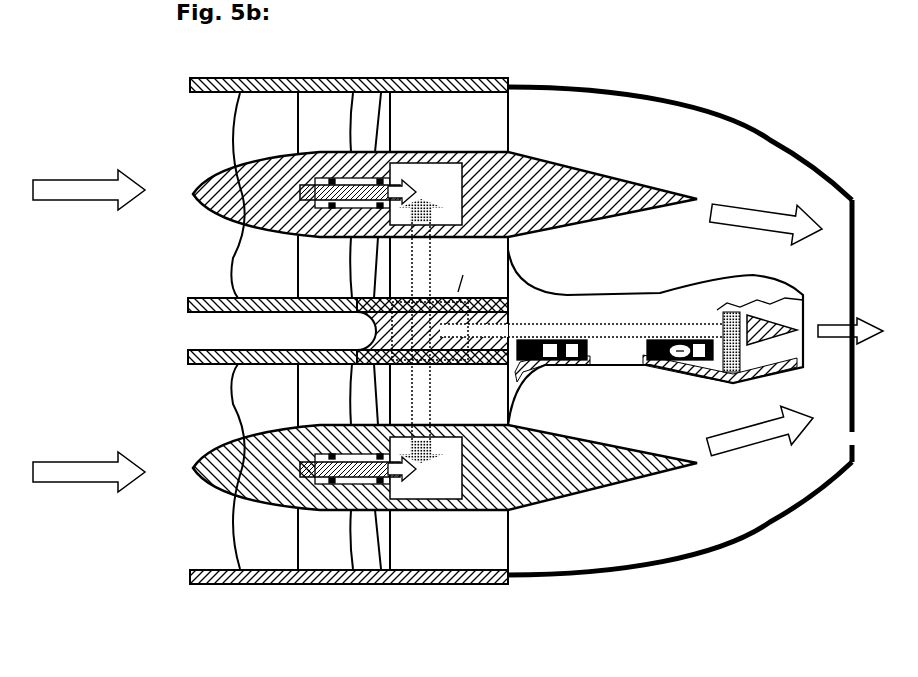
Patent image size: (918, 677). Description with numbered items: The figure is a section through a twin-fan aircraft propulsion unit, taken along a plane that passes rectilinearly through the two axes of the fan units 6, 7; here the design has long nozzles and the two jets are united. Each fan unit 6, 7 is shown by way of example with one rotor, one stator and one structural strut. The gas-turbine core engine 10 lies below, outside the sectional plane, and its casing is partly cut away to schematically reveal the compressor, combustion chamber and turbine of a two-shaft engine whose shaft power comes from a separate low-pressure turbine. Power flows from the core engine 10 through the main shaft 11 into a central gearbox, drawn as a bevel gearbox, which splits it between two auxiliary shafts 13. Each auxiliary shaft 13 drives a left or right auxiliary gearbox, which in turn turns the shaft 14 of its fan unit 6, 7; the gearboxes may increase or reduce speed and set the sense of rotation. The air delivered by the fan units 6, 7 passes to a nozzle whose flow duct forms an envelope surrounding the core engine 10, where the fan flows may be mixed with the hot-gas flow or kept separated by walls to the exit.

The fan unit 6 is at (192, 144).
The fan unit 7 is at (196, 536).
The core engine 10 is at (632, 382).
The main shaft 11 is at (615, 325).
The auxiliary shaft 13 is at (422, 262).
The shaft of the fan unit 14 is at (350, 193).